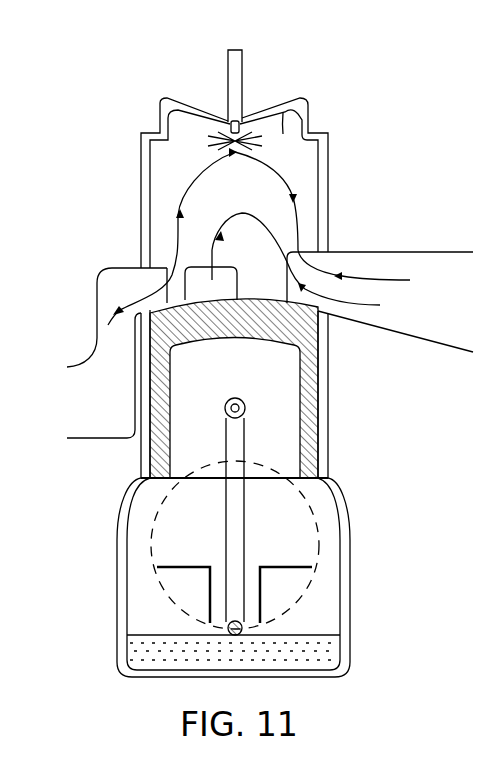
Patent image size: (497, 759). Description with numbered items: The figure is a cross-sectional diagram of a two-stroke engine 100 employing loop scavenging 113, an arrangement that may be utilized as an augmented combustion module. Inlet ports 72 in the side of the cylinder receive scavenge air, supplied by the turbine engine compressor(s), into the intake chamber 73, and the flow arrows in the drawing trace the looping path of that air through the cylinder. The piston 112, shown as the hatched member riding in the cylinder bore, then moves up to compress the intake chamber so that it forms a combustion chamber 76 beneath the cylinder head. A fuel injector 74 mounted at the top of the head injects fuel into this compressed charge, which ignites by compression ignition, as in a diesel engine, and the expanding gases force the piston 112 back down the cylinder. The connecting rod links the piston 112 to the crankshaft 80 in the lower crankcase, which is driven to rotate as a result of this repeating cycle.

The two-stroke engine 100 is at (156, 95).
The fuel injector 74 is at (233, 90).
The combustion chamber 76 is at (300, 100).
The intake chamber 73 is at (180, 190).
The loop scavenging 113 is at (284, 180).
The inlet ports 72 is at (172, 270).
The piston 112 is at (150, 375).
The crankshaft 80 is at (240, 623).